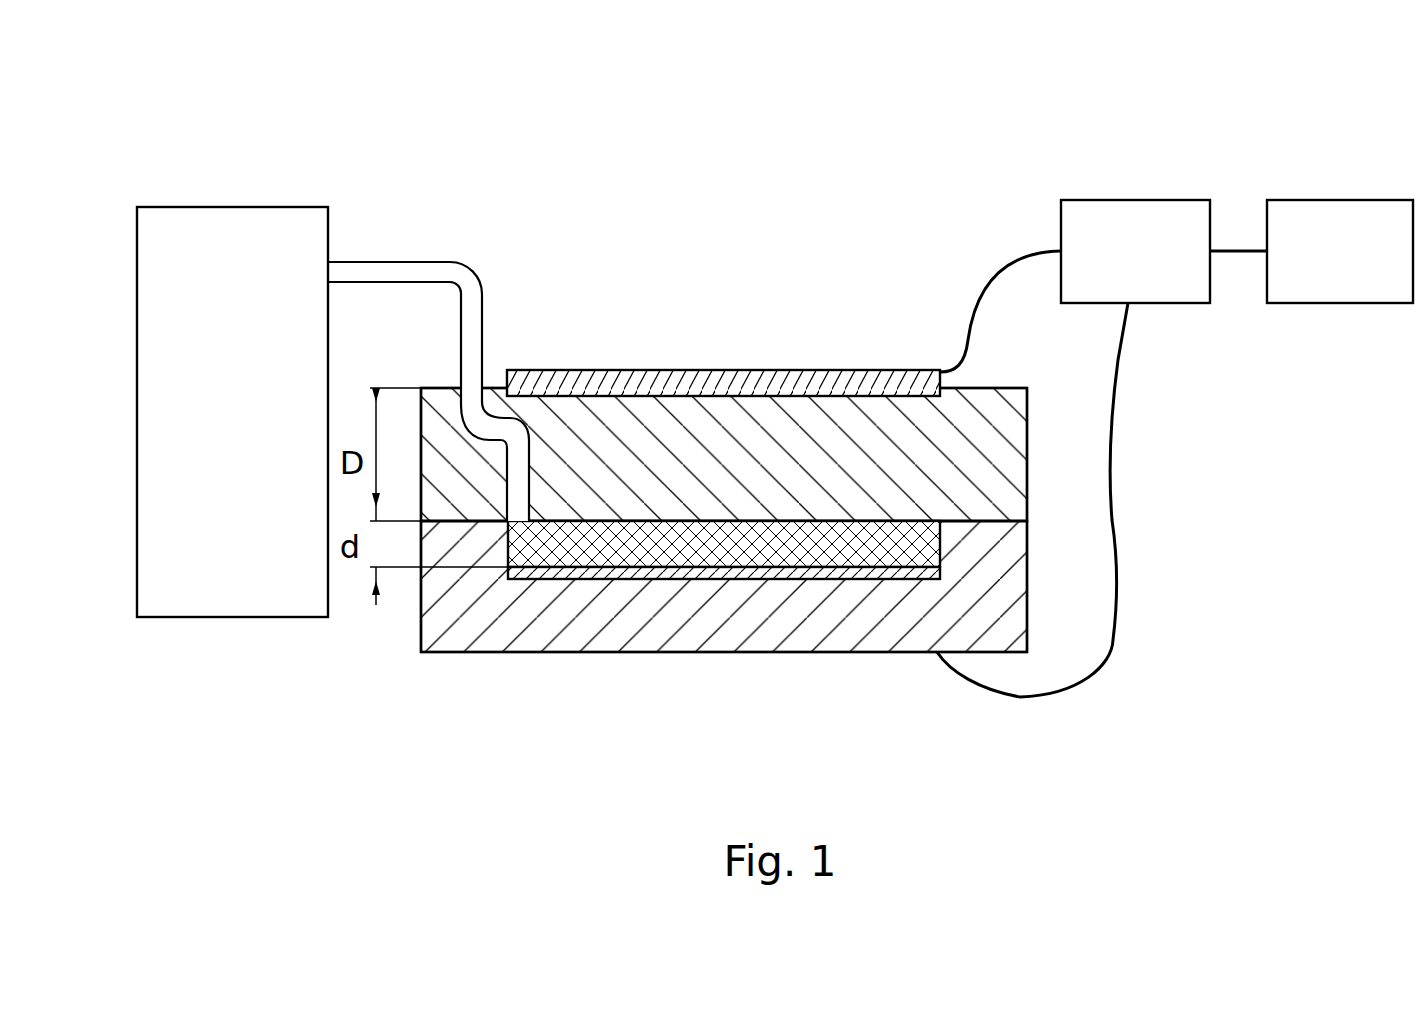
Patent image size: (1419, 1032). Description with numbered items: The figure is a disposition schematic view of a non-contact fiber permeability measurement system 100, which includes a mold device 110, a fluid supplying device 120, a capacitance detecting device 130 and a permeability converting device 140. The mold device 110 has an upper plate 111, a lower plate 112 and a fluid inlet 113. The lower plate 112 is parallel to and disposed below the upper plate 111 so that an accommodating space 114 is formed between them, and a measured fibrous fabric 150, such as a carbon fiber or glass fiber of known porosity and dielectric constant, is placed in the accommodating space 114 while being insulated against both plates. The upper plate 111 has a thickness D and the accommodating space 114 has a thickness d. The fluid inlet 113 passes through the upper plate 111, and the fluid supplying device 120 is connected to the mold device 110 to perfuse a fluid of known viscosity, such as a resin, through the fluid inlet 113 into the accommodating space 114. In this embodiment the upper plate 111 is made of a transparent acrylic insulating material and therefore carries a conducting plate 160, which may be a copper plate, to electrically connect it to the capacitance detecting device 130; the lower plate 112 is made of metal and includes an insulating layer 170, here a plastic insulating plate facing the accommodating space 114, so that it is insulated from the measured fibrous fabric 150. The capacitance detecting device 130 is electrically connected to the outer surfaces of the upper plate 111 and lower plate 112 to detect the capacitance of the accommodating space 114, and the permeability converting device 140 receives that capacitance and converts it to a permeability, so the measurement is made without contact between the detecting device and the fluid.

The non-contact fiber permeability measurement system 100 is at (120, 89).
The mold device 110 is at (336, 677).
The upper plate 111 is at (462, 493).
The lower plate 112 is at (508, 620).
The fluid inlet 113 is at (518, 458).
The accommodating space 114 is at (940, 527).
The fluid supplying device 120 is at (231, 207).
The capacitance detecting device 130 is at (1135, 200).
The permeability converting device 140 is at (1343, 200).
The measured fibrous fabric 150 is at (942, 544).
The conducting plate 160 is at (717, 383).
The insulating layer 170 is at (942, 572).